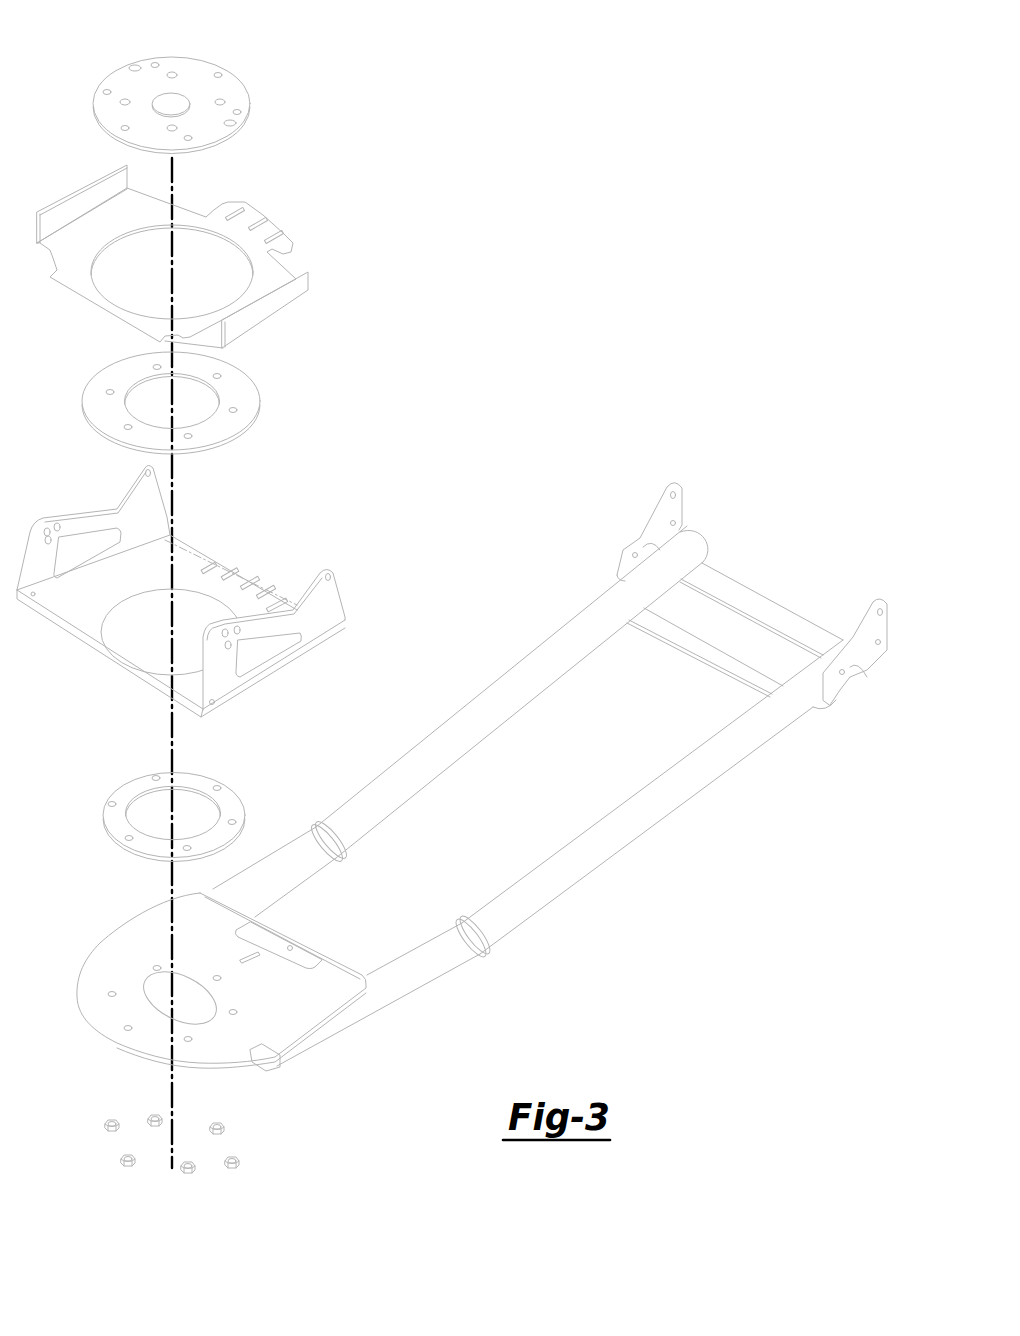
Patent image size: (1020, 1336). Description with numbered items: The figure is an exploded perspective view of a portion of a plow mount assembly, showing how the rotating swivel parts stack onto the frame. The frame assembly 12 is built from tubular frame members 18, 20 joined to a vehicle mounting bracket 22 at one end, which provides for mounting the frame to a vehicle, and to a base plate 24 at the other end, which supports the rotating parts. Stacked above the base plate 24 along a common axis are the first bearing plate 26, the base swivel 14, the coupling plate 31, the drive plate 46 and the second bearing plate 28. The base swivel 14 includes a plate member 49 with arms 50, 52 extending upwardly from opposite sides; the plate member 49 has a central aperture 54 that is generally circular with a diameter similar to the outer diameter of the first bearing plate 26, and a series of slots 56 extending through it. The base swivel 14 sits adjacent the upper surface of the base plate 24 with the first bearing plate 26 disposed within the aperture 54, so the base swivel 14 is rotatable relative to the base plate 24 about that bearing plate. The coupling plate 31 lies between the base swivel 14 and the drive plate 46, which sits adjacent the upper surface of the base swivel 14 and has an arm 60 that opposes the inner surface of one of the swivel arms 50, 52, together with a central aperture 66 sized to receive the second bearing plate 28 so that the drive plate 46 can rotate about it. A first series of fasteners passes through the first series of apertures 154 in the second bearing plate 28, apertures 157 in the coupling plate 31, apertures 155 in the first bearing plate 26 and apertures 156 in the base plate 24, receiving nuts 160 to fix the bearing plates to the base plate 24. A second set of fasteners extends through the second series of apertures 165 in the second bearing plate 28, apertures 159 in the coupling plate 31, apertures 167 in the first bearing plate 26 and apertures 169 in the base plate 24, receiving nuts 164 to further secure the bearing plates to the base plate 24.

The frame assembly 12 is at (550, 777).
The base swivel 14 is at (201, 588).
The tubular frame member 18 is at (510, 669).
The tubular frame member 20 is at (642, 792).
The vehicle mounting bracket 22 is at (759, 602).
The base plate 24 is at (211, 980).
The first bearing plate 26 is at (166, 797).
The second bearing plate 28 is at (178, 91).
The coupling plate 31 is at (186, 404).
The drive plate 46 is at (200, 256).
The plate member 49 is at (189, 560).
The arm 50 is at (88, 521).
The arm 52 is at (318, 625).
The central aperture 54 is at (143, 597).
The slots 56 is at (210, 570).
The arm 60 is at (57, 220).
The central aperture 66 is at (126, 237).
The first series of apertures 154 is at (108, 90).
The first series of apertures 155 is at (111, 802).
The first series of apertures 156 is at (112, 994).
The first series of apertures 157 is at (157, 369).
The second series of apertures 159 is at (217, 376).
The nuts 160 is at (157, 1114).
The nuts 164 is at (215, 1124).
The second series of apertures 165 is at (218, 73).
The second series of apertures 167 is at (217, 787).
The second series of apertures 169 is at (217, 977).